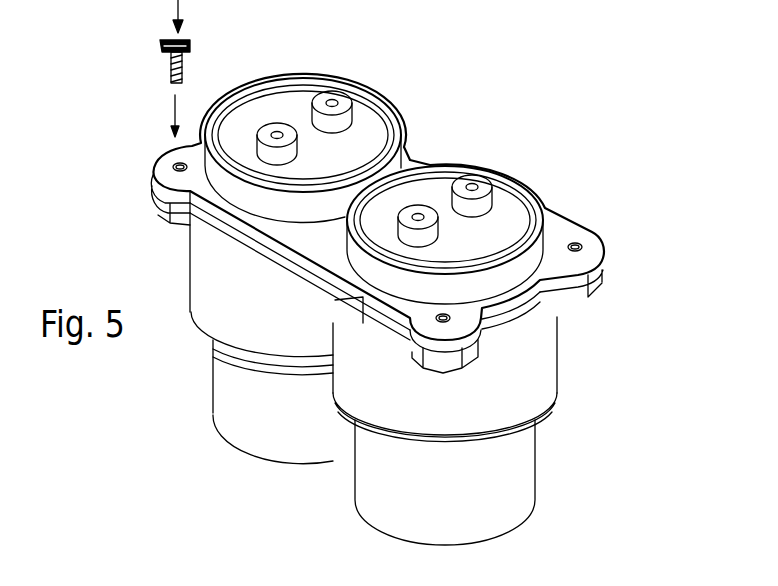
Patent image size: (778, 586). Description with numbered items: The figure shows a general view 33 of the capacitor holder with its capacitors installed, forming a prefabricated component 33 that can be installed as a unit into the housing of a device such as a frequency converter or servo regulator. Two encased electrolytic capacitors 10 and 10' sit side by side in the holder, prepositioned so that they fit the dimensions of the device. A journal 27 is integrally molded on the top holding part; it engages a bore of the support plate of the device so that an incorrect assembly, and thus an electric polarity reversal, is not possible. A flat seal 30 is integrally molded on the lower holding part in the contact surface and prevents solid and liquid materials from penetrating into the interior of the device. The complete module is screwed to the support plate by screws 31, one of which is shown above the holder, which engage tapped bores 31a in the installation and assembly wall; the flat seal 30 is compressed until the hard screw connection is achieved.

The electrolytic capacitor 10 is at (486, 431).
The electrolytic capacitor 10' is at (235, 333).
The journal 27 is at (600, 256).
The flat seal 30 is at (553, 220).
The screw 31 is at (183, 68).
The tapped bore 31a is at (180, 158).
The prefabricated component 33 is at (521, 132).